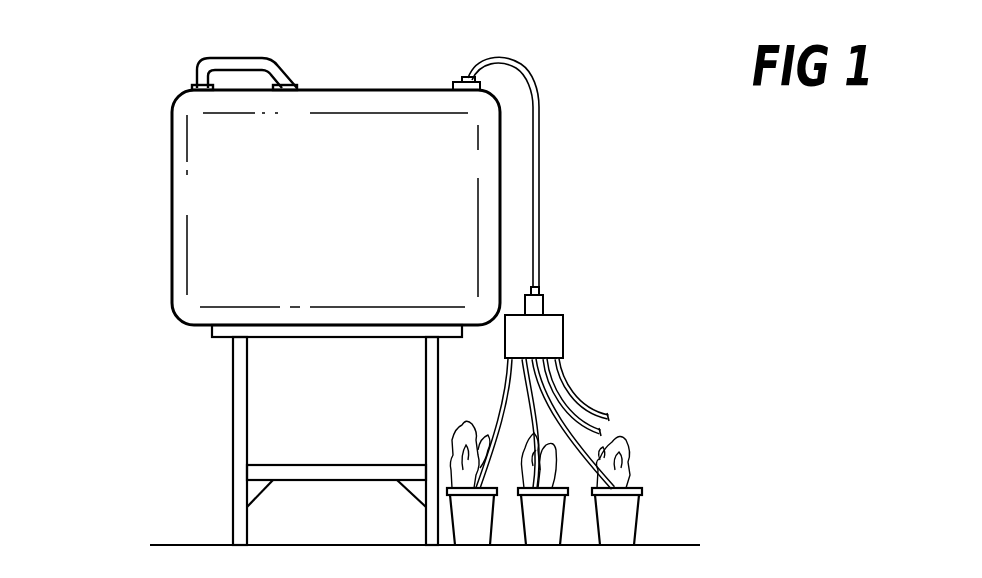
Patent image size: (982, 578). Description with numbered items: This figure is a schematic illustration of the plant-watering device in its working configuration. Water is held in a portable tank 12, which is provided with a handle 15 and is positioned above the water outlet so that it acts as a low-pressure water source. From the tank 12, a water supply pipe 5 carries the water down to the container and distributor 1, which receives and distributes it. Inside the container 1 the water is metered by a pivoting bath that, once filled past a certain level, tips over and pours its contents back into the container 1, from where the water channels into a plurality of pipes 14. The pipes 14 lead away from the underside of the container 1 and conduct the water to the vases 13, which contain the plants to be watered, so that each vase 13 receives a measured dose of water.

The container and distributor 1 is at (540, 325).
The water supply pipe 5 is at (540, 163).
The portable tank 12 is at (203, 157).
The vases 13 is at (545, 508).
The pipes 14 is at (557, 427).
The handle 15 is at (203, 63).